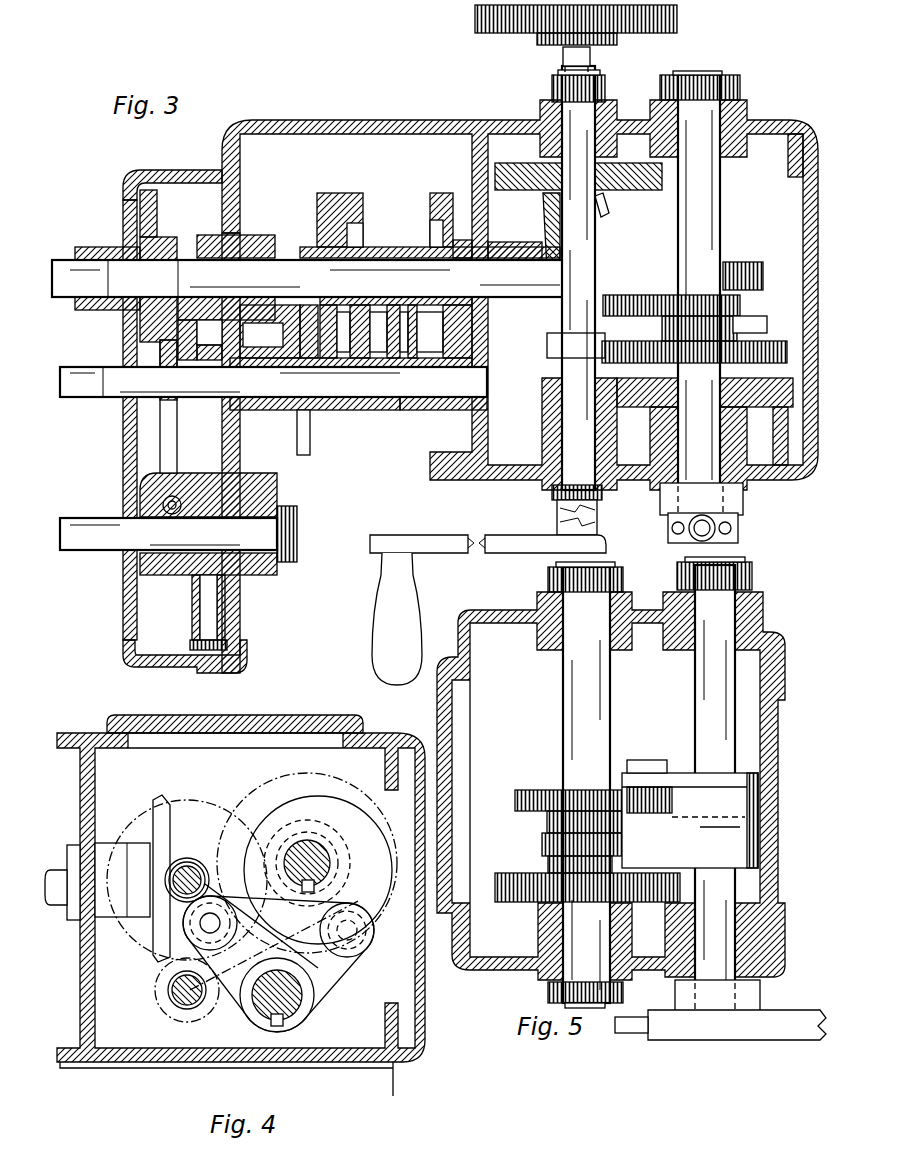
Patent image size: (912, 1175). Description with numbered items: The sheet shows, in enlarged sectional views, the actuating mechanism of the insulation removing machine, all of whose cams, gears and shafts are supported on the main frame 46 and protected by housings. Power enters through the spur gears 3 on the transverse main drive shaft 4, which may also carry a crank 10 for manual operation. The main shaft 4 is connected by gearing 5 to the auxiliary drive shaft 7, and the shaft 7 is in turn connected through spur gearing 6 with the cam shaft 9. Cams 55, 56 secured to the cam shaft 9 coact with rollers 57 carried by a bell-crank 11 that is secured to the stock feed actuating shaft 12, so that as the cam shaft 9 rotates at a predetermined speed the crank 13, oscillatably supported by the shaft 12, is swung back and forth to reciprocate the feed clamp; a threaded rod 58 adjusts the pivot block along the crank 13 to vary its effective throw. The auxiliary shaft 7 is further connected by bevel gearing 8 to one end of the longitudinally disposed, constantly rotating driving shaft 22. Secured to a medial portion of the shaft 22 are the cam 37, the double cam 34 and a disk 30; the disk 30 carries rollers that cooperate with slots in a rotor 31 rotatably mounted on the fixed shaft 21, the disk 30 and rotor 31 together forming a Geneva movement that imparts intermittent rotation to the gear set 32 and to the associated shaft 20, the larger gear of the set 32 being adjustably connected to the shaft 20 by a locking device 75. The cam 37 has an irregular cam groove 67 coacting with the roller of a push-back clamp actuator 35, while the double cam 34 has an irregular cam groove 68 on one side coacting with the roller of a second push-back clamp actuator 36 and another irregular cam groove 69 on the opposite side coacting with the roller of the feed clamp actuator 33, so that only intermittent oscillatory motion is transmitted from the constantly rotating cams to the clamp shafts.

In FIG. 3, the spur gears 3 is at (478, 22).
In FIG. 3, the main drive shaft 4 is at (573, 50).
In FIG. 4, the main drive shaft 4 is at (175, 992).
In FIG. 3, the gearing 5 is at (521, 166).
In FIG. 4, the gearing 5 is at (160, 972).
In FIG. 3, the spur gearing 6 is at (615, 408).
In FIG. 4, the spur gearing 6 is at (331, 775).
In FIG. 5, the spur gearing 6 is at (518, 903).
In FIG. 3, the auxiliary drive shaft 7 is at (595, 254).
In FIG. 4, the auxiliary drive shaft 7 is at (193, 868).
In FIG. 3, the bevel gearing 8 is at (553, 233).
In FIG. 4, the bevel gearing 8 is at (167, 803).
In FIG. 3, the cam shaft 9 is at (720, 224).
In FIG. 4, the cam shaft 9 is at (313, 846).
In FIG. 5, the cam shaft 9 is at (572, 720).
In FIG. 3, the crank 10 is at (483, 547).
In FIG. 3, the bell-crank 11 is at (769, 292).
In FIG. 4, the bell-crank 11 is at (244, 1017).
In FIG. 5, the bell-crank 11 is at (652, 770).
In FIG. 4, the stock feed actuating shaft 12 is at (298, 1005).
In FIG. 5, the stock feed actuating shaft 12 is at (705, 704).
In FIG. 3, the crank 13 is at (740, 532).
In FIG. 5, the crank 13 is at (779, 1022).
In FIG. 3, the shaft 20 is at (106, 527).
In FIG. 3, the fixed shaft 21 is at (98, 397).
In FIG. 3, the driving shaft 22 is at (284, 259).
In FIG. 4, the driving shaft 22 is at (60, 868).
In FIG. 3, the disk 30 is at (150, 333).
In FIG. 3, the rotor 31 is at (173, 441).
In FIG. 3, the gear set 32 is at (217, 346).
In FIG. 3, the feed clamp actuator 33 is at (303, 455).
In FIG. 3, the double cam 34 is at (340, 195).
In FIG. 3, the push-back clamp actuator 35 is at (441, 411).
In FIG. 3, the push-back clamp actuator 36 is at (378, 411).
In FIG. 3, the cam 37 is at (441, 195).
In FIG. 3, the main frame 46 is at (428, 461).
In FIG. 4, the main frame 46 is at (95, 774).
In FIG. 5, the main frame 46 is at (472, 667).
In FIG. 3, the cam 55 is at (631, 301).
In FIG. 4, the cam 55 is at (250, 803).
In FIG. 5, the cam 55 is at (518, 798).
In FIG. 3, the cam 56 is at (762, 355).
In FIG. 4, the cam 56 is at (376, 920).
In FIG. 5, the cam 56 is at (542, 843).
In FIG. 3, the rollers 57 is at (600, 352).
In FIG. 4, the rollers 57 is at (222, 913).
In FIG. 5, the rollers 57 is at (668, 800).
In FIG. 3, the threaded rod 58 is at (702, 536).
In FIG. 5, the threaded rod 58 is at (640, 1033).
In FIG. 3, the cam groove 67 is at (431, 230).
In FIG. 3, the cam groove 68 is at (363, 234).
In FIG. 3, the cam groove 69 is at (330, 339).
In FIG. 3, the locking device 75 is at (163, 502).